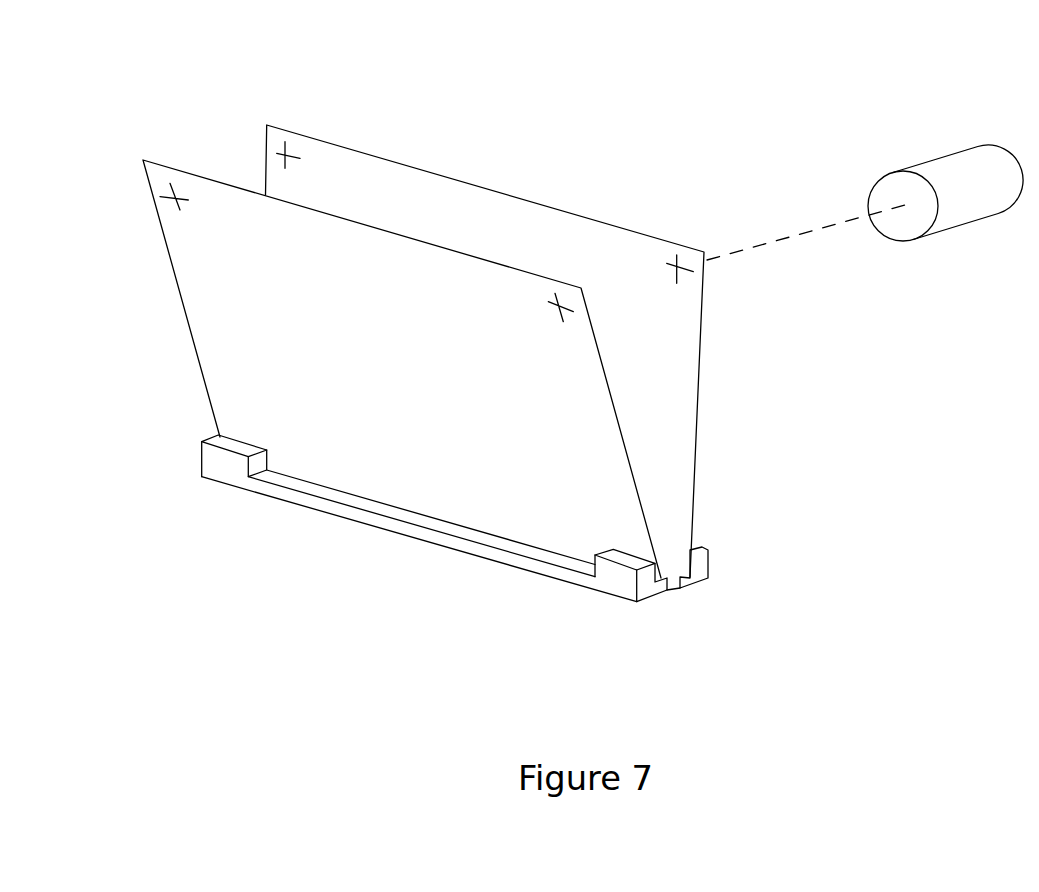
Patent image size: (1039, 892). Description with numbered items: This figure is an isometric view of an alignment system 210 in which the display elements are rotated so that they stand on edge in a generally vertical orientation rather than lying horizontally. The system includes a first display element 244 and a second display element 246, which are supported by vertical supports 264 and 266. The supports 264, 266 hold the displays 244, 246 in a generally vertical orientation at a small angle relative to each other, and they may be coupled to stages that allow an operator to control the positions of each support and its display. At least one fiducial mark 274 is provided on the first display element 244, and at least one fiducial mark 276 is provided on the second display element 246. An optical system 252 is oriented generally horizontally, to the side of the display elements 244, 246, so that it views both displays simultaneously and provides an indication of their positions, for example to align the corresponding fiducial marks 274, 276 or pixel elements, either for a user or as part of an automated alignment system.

The alignment system 210 is at (706, 84).
The first display element 244 is at (213, 348).
The second display element 246 is at (683, 413).
The optical system 252 is at (972, 212).
The vertical support 264 is at (620, 587).
The vertical support 266 is at (702, 567).
The fiducial mark 274 is at (165, 208).
The fiducial mark 276 is at (278, 160).